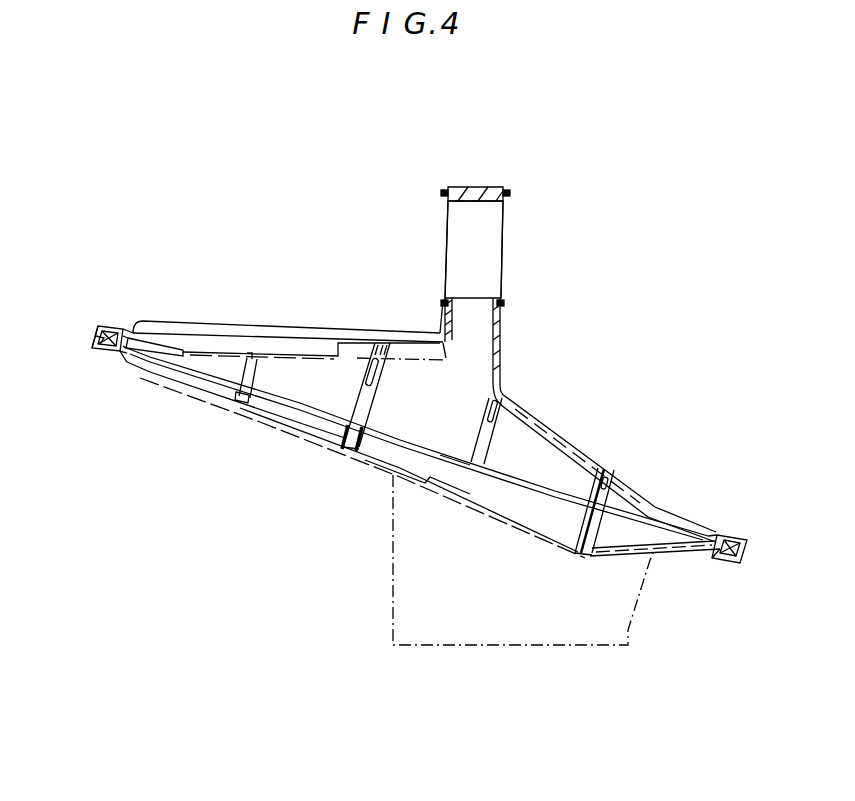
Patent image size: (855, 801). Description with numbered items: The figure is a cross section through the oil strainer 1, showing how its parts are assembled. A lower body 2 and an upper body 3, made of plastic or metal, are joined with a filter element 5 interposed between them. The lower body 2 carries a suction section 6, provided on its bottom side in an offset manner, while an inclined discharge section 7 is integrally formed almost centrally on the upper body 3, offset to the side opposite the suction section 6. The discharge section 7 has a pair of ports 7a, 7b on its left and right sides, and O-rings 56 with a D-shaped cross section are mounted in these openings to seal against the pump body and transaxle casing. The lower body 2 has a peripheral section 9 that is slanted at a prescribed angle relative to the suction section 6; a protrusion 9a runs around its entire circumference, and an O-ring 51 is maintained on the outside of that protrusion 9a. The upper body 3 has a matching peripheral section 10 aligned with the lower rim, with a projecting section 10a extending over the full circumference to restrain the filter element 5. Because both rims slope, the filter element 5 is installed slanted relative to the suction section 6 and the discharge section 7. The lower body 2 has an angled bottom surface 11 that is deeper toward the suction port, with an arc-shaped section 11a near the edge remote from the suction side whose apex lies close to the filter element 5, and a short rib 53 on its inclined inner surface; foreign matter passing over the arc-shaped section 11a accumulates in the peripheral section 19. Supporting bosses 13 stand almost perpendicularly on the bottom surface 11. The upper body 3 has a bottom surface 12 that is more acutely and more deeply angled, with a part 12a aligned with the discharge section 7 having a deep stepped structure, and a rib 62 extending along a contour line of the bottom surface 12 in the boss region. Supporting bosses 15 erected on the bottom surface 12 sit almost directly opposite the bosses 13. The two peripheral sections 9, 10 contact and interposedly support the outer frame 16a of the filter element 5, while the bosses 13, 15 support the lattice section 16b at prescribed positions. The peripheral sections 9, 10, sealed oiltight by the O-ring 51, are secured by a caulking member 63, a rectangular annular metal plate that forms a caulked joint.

The oil strainer 1 is at (297, 175).
The lower body 2 is at (276, 468).
The upper body 3 is at (297, 345).
The filter element 5 is at (286, 443).
The suction section 6 is at (563, 645).
The discharge section 7 is at (508, 268).
The port 7a is at (504, 235).
The port 7b is at (446, 235).
The peripheral section 9 is at (105, 352).
The protrusion 9a is at (105, 330).
The peripheral section 10 is at (112, 325).
The projecting section 10a is at (130, 330).
The bottom surface 11 is at (398, 473).
The arc-shaped section 11a is at (185, 378).
The bottom surface 12 is at (572, 428).
The part 12a is at (430, 345).
The supporting boss 13 is at (350, 468).
The supporting boss 15 is at (360, 393).
The outer frame 16a is at (126, 366).
The lattice section 16b is at (470, 444).
The peripheral section 19 is at (140, 395).
The O-ring 51 is at (93, 337).
The short rib 53 is at (301, 441).
The O-ring 56 is at (444, 192).
The rib 62 is at (497, 410).
The caulking member 63 is at (742, 538).